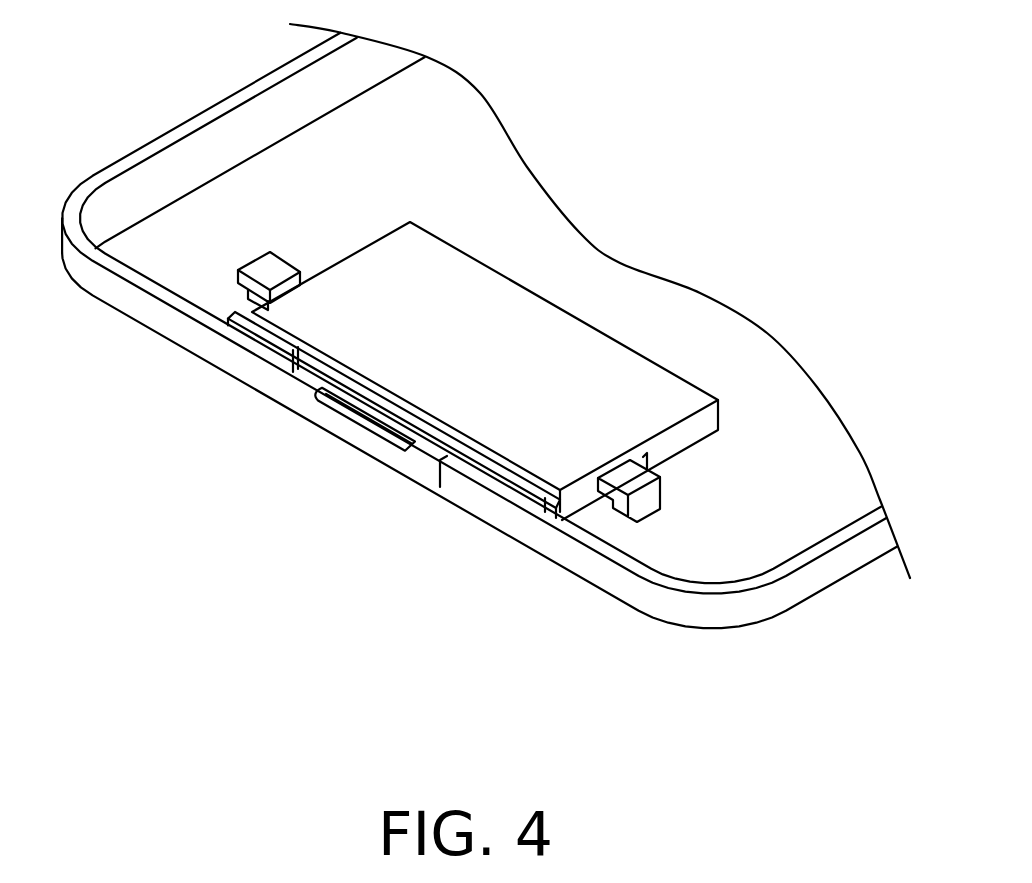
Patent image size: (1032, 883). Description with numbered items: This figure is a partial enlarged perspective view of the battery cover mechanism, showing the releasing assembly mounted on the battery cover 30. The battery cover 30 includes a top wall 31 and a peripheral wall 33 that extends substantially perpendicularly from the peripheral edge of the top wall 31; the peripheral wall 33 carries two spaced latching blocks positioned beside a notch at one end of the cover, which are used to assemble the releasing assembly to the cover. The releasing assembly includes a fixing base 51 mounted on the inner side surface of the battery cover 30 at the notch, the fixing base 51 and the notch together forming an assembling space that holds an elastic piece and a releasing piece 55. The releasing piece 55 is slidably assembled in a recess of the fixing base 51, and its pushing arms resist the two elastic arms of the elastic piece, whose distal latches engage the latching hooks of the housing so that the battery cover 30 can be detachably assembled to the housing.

The battery cover 30 is at (465, 314).
The top wall 31 is at (293, 157).
The peripheral wall 33 is at (137, 155).
The fixing base 51 is at (490, 375).
The releasing piece 55 is at (343, 428).